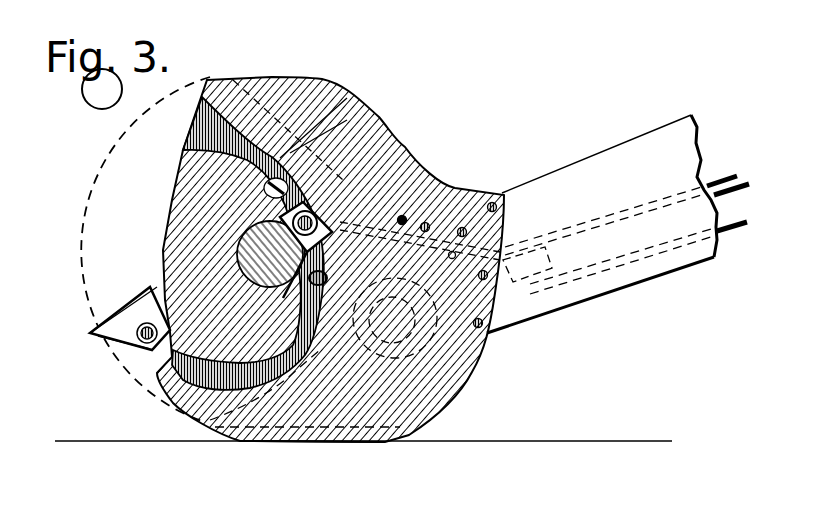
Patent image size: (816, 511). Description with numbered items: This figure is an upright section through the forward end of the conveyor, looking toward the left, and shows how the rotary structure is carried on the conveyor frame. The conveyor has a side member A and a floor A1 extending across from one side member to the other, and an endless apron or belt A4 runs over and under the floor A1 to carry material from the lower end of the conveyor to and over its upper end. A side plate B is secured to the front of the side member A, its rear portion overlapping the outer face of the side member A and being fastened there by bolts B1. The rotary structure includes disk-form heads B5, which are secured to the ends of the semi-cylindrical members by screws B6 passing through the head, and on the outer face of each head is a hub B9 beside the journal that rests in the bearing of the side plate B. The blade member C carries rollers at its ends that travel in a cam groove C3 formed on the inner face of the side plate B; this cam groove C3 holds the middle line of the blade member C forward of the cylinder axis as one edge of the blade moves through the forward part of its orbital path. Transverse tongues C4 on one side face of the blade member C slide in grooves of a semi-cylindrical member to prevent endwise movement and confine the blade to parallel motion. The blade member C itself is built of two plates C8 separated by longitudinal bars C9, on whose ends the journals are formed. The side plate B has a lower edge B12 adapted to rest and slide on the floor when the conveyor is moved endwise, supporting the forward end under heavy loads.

The side member A is at (621, 143).
The floor A1 is at (751, 180).
The endless apron or belt A4 is at (740, 238).
The side plate B is at (389, 127).
The bolts B1 is at (475, 192).
The disk-form heads B5 is at (266, 180).
The screws B6 is at (330, 140).
The hub B9 is at (240, 252).
The lower edge B12 is at (365, 442).
The blade member C is at (130, 313).
The cam groove C3 is at (187, 135).
The transverse tongues C4 is at (157, 287).
The plates C8 is at (115, 340).
The longitudinal bars C9 is at (145, 330).